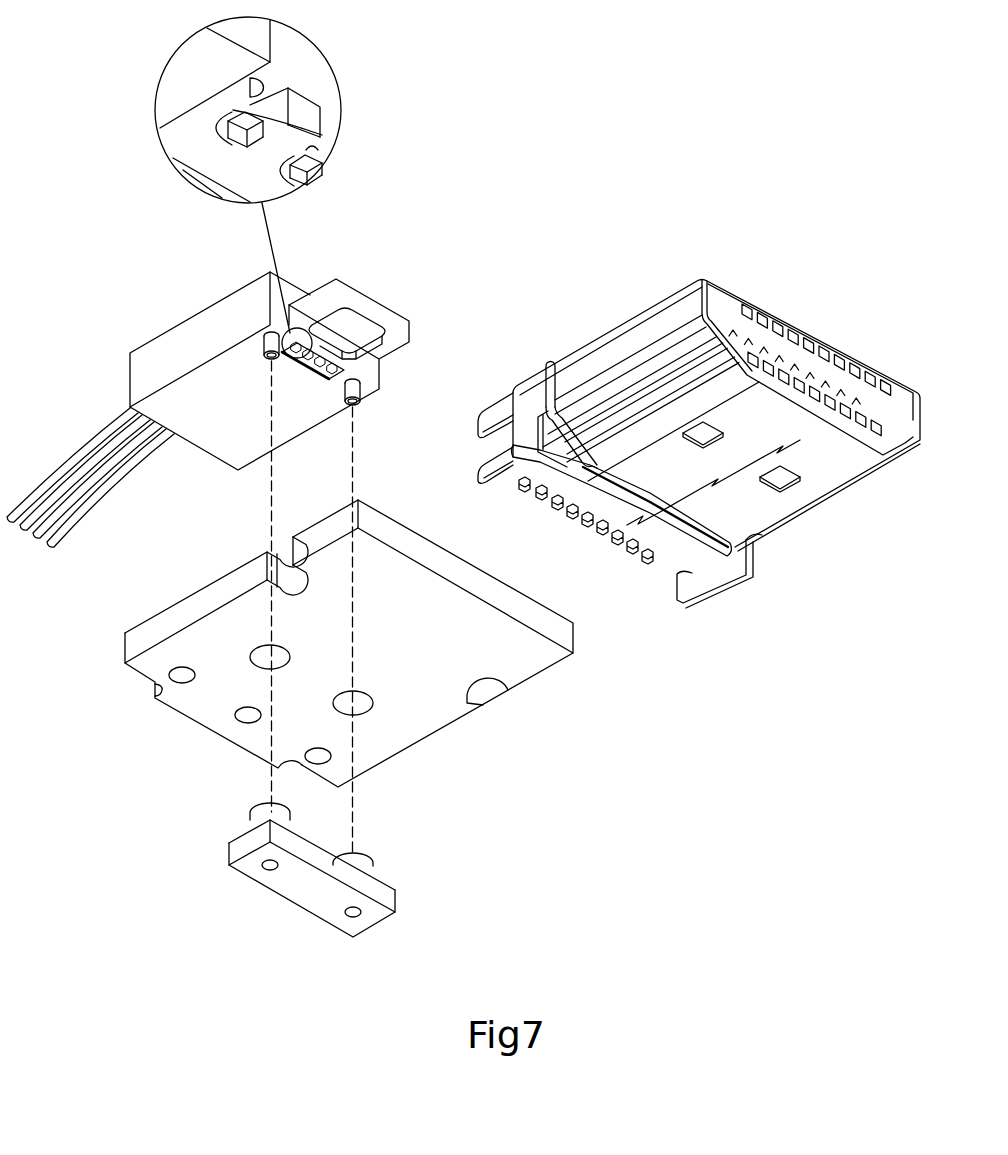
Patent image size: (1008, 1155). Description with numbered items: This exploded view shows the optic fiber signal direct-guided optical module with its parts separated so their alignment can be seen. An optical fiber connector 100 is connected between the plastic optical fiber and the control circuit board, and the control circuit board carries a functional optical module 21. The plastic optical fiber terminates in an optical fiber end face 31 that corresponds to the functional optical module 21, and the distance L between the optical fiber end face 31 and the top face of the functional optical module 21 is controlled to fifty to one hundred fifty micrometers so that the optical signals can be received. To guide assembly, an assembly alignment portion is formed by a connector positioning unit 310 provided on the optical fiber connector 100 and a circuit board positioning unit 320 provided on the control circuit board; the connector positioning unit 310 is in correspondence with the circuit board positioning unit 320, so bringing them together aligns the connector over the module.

The optical fiber connector 100 is at (173, 335).
The functional optical module 21 is at (247, 137).
The optical fiber end face 31 is at (303, 103).
The distance L is at (320, 137).
The connector positioning unit 310 is at (362, 403).
The circuit board positioning unit 320 is at (390, 902).